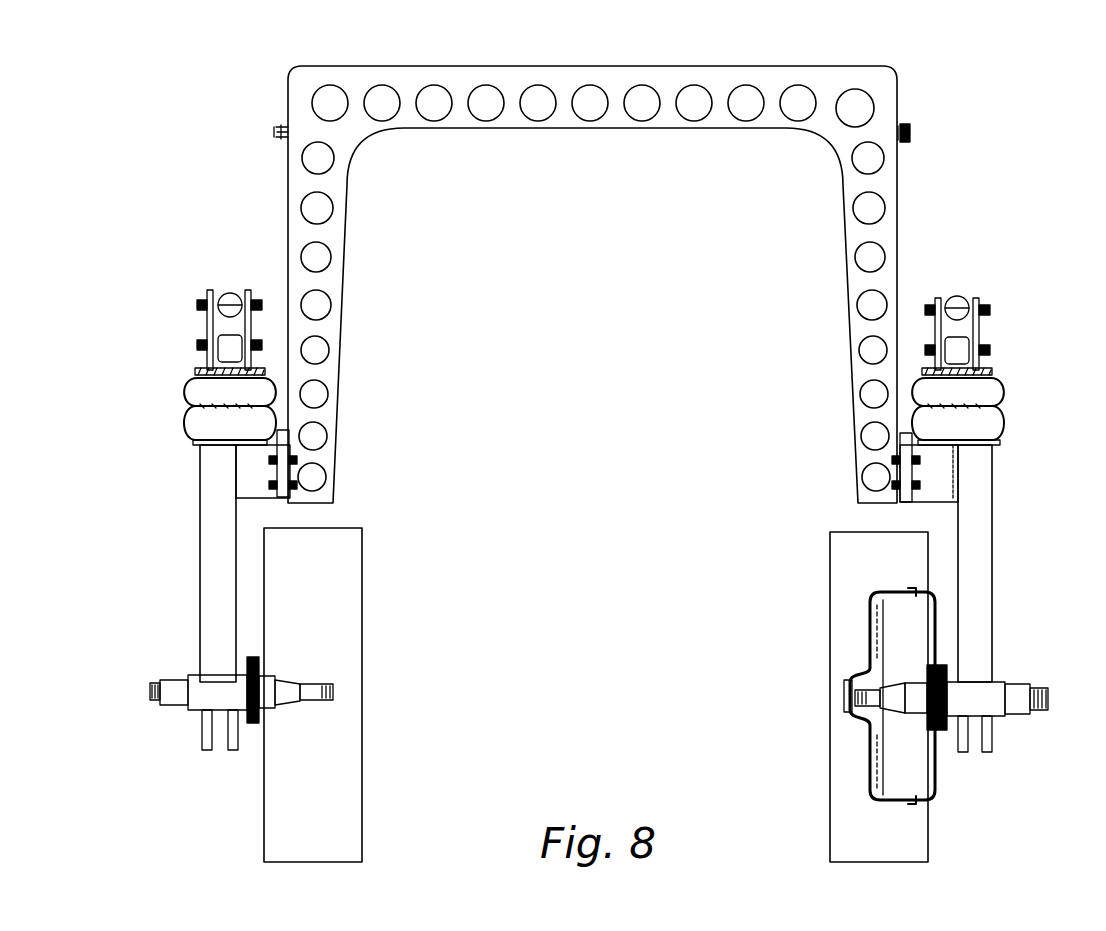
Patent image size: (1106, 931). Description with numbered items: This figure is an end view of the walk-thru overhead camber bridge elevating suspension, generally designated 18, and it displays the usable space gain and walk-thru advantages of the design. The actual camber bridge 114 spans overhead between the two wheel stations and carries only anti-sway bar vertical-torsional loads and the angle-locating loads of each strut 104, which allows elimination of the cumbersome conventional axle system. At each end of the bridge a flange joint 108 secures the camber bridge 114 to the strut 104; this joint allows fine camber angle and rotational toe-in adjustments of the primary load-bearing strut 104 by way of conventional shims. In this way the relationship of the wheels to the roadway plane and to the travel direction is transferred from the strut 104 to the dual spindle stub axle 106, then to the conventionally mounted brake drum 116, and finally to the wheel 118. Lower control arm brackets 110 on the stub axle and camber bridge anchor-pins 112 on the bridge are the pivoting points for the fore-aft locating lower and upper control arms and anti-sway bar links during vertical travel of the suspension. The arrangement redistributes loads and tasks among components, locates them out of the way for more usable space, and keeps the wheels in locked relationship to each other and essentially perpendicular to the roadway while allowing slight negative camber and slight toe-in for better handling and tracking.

The overhead camber bridge suspension 18 is at (600, 53).
The strut 104 is at (215, 522).
The dual spindle stub axle 106 is at (200, 712).
The flange joint 108 is at (285, 502).
The lower control arm bracket 110 is at (963, 752).
The camber bridge anchor-pin 112 is at (908, 125).
The camber bridge 114 is at (850, 140).
The brake drum 116 is at (913, 805).
The wheel 118 is at (335, 560).